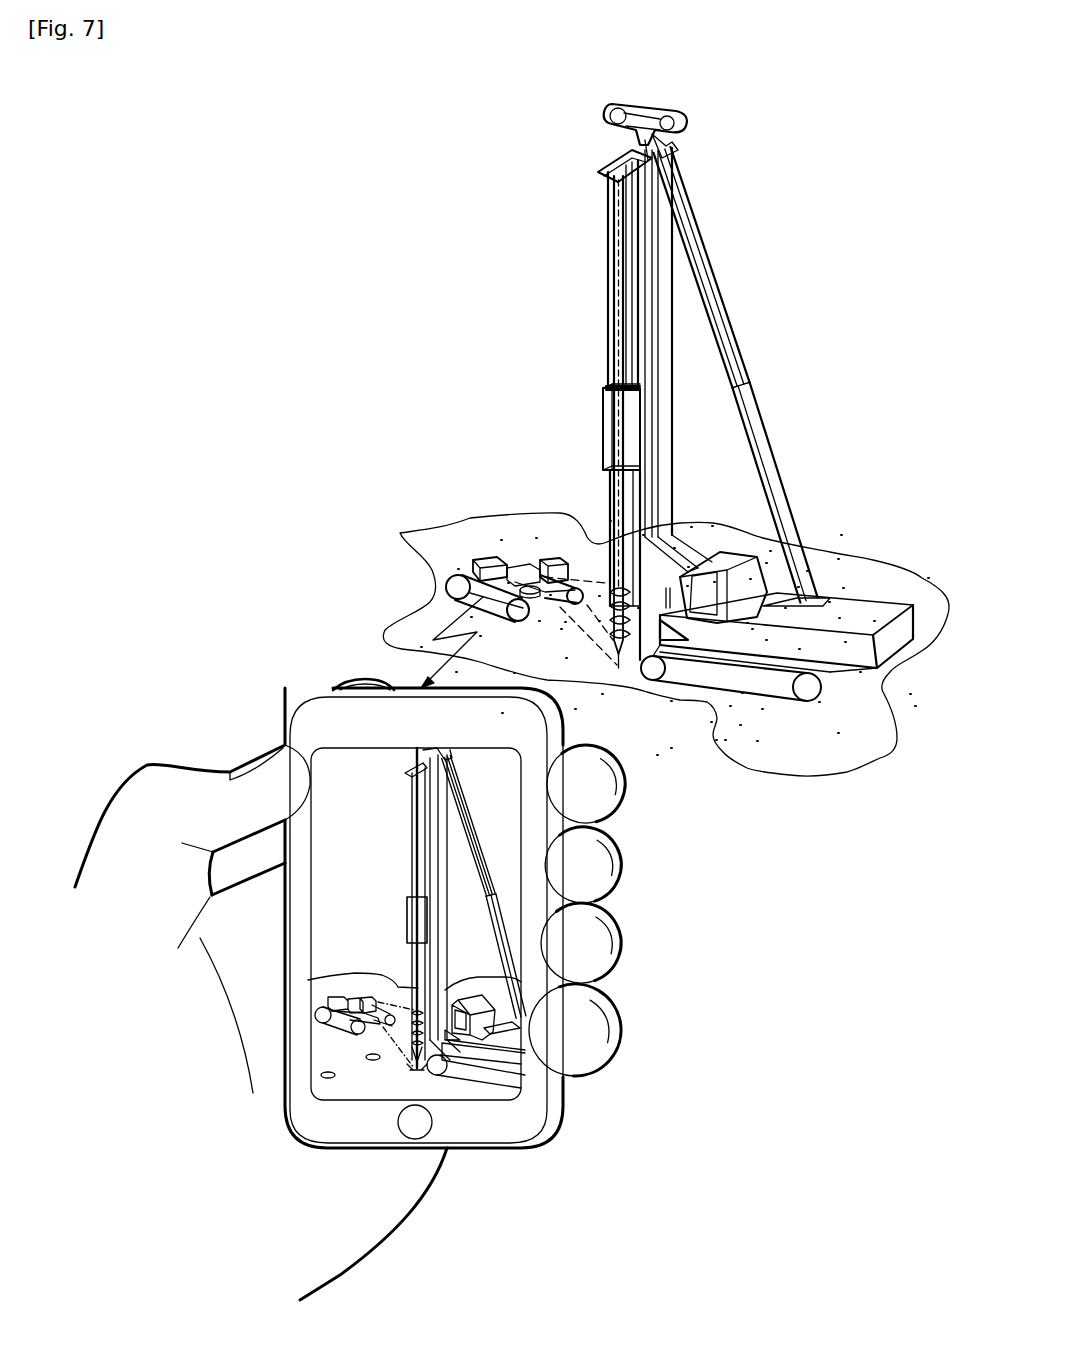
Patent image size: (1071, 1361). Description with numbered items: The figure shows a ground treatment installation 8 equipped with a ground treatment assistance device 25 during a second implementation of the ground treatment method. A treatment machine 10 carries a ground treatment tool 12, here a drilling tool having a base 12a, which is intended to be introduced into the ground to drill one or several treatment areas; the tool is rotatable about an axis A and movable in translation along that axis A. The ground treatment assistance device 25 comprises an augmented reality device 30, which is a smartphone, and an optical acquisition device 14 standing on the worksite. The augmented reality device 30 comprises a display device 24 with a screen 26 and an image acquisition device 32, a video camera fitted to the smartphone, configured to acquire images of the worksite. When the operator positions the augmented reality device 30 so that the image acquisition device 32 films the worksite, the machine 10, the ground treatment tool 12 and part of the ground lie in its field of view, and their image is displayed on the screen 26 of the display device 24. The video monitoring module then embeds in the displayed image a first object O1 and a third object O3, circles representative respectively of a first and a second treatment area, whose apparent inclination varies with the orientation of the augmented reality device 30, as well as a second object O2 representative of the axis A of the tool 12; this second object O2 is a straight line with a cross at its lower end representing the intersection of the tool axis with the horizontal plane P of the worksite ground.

The ground treatment installation 8 is at (834, 382).
The treatment machine 10 is at (591, 387).
The ground treatment tool 12 is at (612, 492).
The base 12a is at (593, 613).
The optical acquisition device 14 is at (476, 547).
The display device 24 is at (322, 724).
The ground treatment assistance device 25 is at (372, 580).
The screen 26 is at (340, 926).
The augmented reality device 30 is at (280, 996).
The image acquisition device 32 is at (362, 690).
The axis A is at (612, 205).
The first object O1 is at (373, 1076).
The second object O2 is at (414, 838).
The third object O3 is at (322, 1078).
The horizontal plane P is at (811, 748).